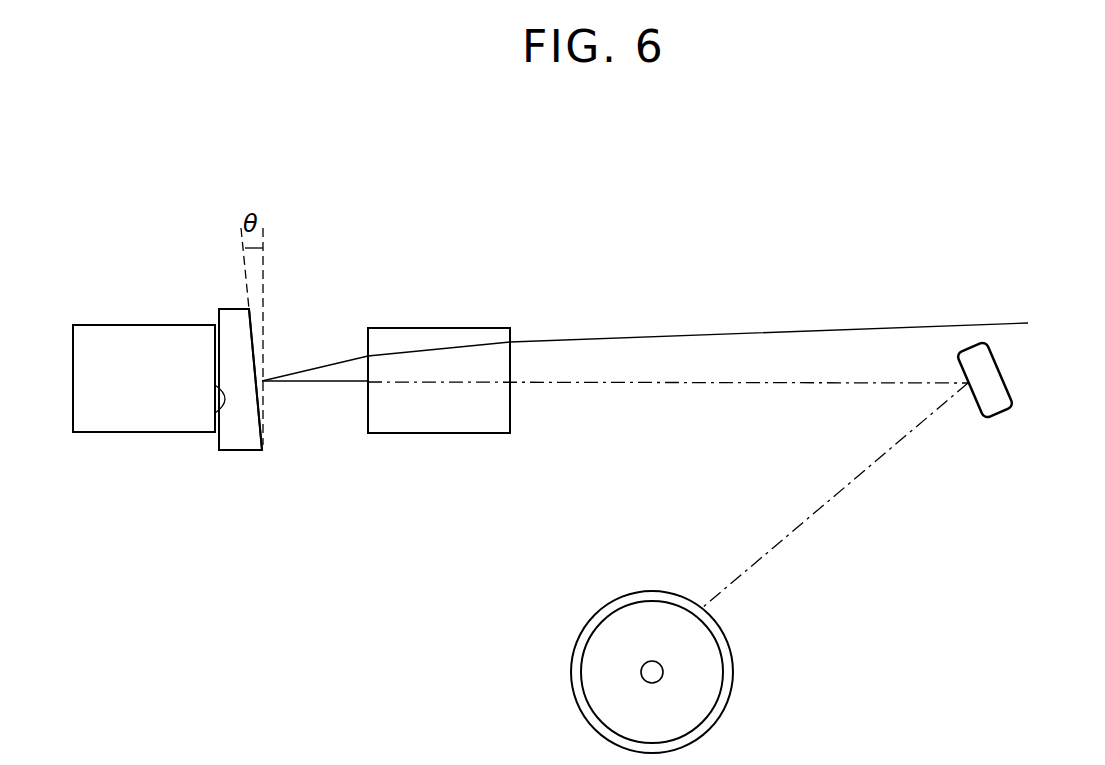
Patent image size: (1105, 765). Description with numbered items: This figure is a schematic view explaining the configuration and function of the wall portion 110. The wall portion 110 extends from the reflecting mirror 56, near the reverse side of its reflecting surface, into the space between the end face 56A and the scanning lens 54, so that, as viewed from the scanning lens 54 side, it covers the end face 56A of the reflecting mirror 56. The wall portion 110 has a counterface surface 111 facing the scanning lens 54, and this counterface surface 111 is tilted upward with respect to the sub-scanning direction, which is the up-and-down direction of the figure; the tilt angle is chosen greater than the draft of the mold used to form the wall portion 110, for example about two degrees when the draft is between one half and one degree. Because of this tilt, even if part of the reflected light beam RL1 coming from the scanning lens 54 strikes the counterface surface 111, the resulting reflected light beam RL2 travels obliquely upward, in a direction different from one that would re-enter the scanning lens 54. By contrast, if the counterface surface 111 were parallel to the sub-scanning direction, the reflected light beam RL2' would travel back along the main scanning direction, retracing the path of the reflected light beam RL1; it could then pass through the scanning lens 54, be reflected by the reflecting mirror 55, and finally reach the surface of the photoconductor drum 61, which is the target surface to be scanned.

The reflecting mirror 56 is at (122, 318).
The end face 56A is at (215, 413).
The wall portion 110 is at (226, 304).
The counterface surface 111 is at (253, 333).
The scanning lens 54 is at (457, 328).
The reflected light beam RL1 is at (323, 384).
The reflected light beam RL2 is at (645, 315).
The reflected light beam RL2' is at (668, 425).
The reflecting mirror 55 is at (997, 383).
The photoconductor drum 61 is at (588, 622).